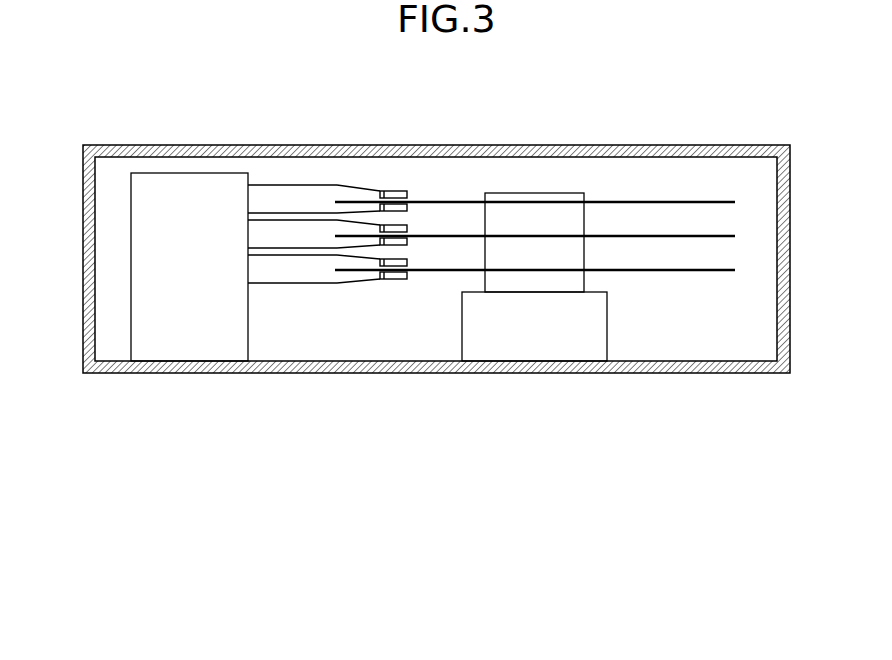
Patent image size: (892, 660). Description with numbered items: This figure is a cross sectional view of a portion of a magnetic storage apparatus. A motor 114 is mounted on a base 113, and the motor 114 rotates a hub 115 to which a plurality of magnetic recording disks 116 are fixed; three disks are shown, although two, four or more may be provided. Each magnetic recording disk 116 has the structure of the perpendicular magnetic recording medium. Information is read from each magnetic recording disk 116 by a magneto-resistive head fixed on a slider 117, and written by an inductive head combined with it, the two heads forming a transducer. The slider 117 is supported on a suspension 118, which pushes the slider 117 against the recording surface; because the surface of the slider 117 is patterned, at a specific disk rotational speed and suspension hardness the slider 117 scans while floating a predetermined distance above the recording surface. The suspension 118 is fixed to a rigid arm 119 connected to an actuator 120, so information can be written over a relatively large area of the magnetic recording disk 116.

The base 113 is at (738, 376).
The motor 114 is at (553, 348).
The hub 115 is at (548, 190).
The magnetic recording disk 116 is at (665, 196).
The slider 117 is at (403, 187).
The suspension 118 is at (370, 184).
The rigid arm 119 is at (300, 182).
The actuator 120 is at (195, 352).